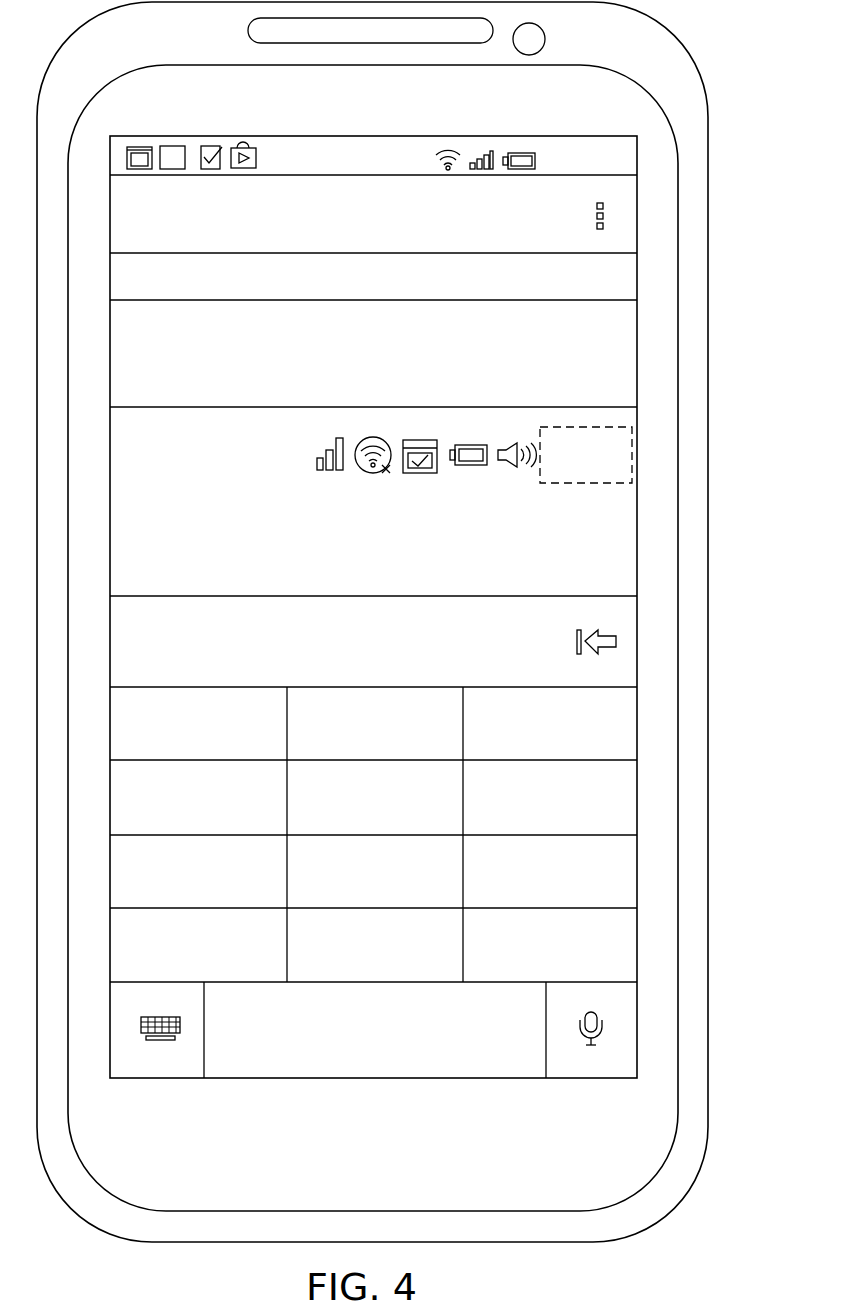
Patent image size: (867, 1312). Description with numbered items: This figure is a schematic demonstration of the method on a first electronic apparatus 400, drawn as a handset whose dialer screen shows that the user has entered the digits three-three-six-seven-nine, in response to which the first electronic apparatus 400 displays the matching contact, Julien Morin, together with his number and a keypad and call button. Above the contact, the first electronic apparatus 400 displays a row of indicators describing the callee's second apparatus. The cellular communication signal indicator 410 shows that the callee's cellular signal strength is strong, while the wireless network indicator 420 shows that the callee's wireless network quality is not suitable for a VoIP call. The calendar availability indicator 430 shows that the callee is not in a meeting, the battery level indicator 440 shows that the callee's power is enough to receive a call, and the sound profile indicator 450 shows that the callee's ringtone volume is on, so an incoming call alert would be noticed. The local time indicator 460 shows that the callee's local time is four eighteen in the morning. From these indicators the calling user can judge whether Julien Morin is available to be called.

The first electronic apparatus 400 is at (692, 180).
The cellular communication signal indicator 410 is at (335, 437).
The wireless network indicator 420 is at (377, 436).
The calendar availability indicator 430 is at (426, 440).
The battery level indicator 440 is at (473, 455).
The sound profile indicator 450 is at (517, 453).
The local time indicator 460 is at (583, 427).